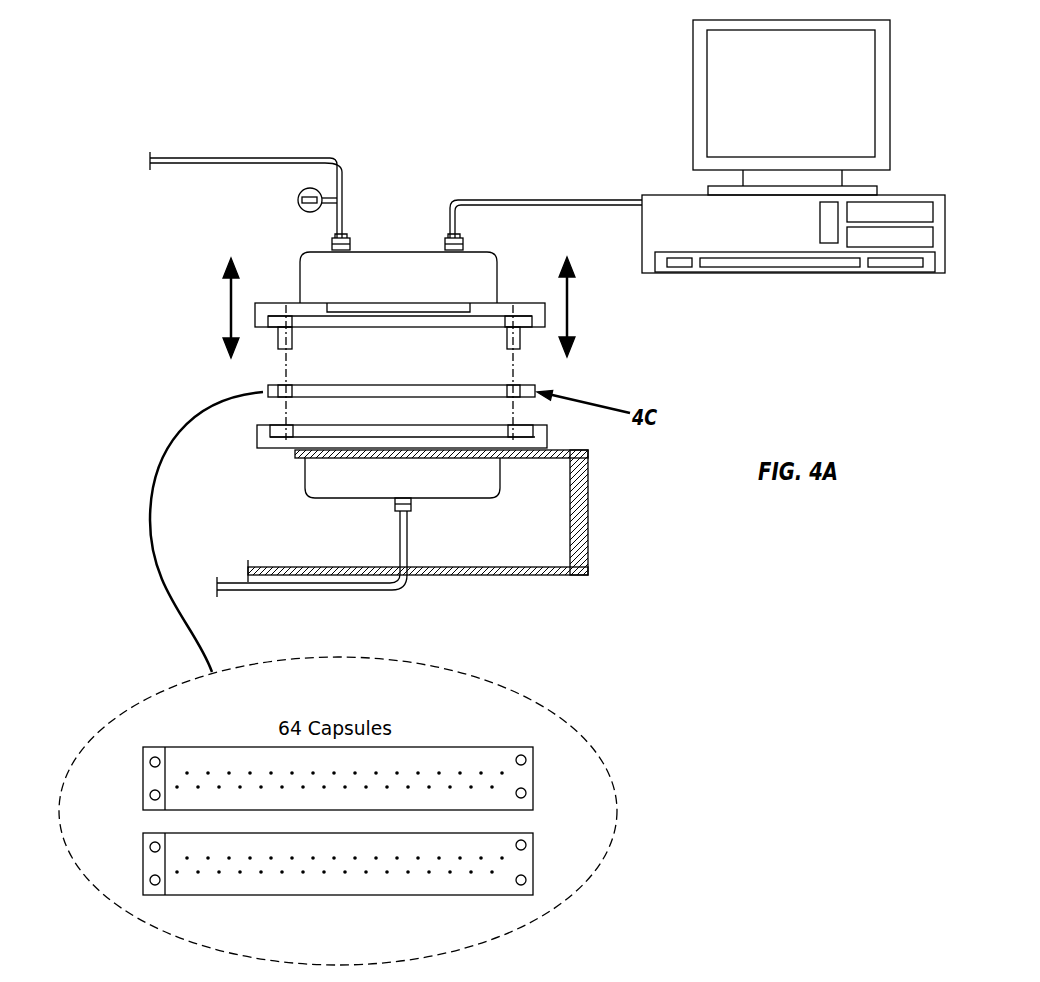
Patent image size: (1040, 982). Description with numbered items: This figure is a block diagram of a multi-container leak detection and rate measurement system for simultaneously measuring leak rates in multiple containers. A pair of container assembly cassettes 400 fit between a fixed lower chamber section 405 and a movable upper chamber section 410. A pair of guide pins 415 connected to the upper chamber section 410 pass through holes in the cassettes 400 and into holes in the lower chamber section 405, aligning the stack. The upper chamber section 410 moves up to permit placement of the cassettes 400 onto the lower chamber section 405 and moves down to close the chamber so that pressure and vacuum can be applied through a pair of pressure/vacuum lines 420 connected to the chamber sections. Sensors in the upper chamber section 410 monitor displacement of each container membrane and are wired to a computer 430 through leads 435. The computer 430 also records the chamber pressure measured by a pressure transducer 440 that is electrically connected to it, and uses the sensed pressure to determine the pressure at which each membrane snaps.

The container assembly cassettes 400 is at (265, 398).
The fixed lower chamber section 405 is at (257, 450).
The movable upper chamber section 410 is at (260, 328).
The guide pins 415 is at (293, 338).
The pressure/vacuum lines 420 is at (250, 163).
The computer 430 is at (668, 192).
The leads 435 is at (548, 207).
The pressure transducer 440 is at (302, 209).